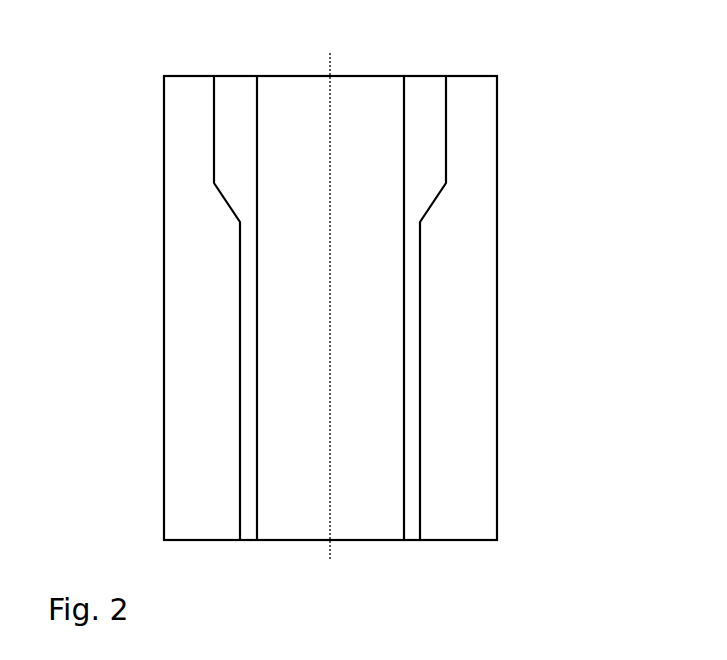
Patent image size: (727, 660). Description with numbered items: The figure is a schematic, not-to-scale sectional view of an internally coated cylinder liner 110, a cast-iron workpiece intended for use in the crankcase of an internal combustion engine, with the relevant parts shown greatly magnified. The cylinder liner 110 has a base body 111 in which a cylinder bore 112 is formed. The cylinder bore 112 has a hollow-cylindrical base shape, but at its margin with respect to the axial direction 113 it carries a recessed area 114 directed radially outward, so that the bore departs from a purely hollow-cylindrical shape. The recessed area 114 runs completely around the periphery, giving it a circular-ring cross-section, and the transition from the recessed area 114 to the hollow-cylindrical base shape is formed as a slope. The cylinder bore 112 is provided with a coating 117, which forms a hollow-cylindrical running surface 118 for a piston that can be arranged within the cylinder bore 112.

The cylinder liner 110 is at (512, 50).
The base body 111 is at (485, 107).
The cylinder bore 112 is at (313, 100).
The axial direction 113 is at (332, 68).
The recessed area 114 is at (431, 139).
The coating 117 is at (432, 87).
The running surface 118 is at (257, 125).